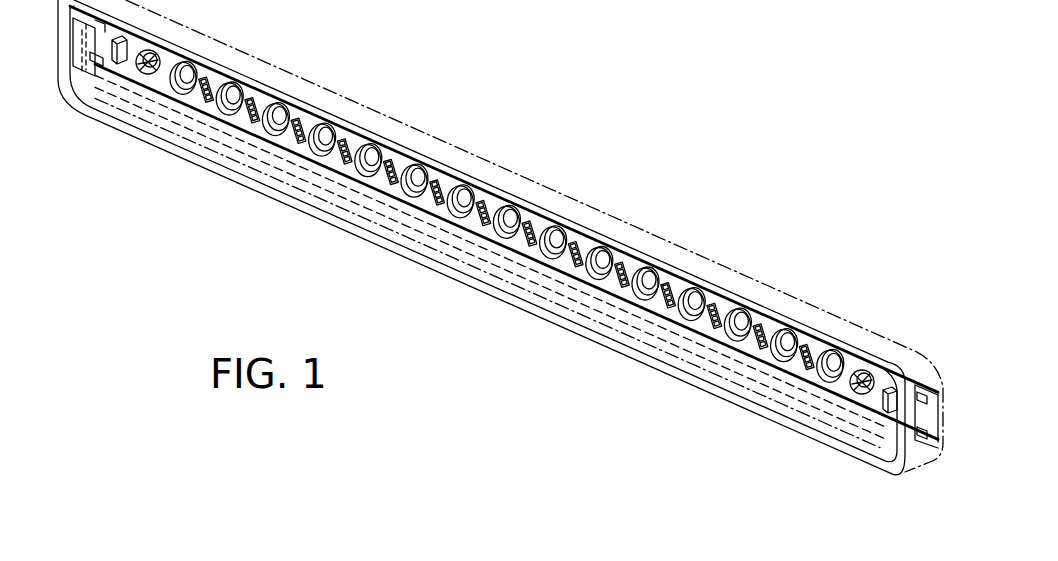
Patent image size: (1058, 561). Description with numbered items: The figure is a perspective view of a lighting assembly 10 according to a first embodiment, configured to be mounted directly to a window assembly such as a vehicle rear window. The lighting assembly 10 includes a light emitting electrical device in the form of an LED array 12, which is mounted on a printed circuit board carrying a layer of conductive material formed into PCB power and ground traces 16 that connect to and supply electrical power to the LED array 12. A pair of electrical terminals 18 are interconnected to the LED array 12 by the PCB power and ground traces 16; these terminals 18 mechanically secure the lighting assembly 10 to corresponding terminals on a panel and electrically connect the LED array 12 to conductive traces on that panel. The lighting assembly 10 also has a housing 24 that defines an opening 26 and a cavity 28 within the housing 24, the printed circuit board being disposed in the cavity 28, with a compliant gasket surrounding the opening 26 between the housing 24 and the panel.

The lighting assembly 10 is at (560, 108).
The LED array 12 is at (273, 136).
The PCB power and ground traces 16 is at (207, 97).
The pair of electrical terminals 18 is at (135, 74).
The housing 24 is at (642, 229).
The opening 26 is at (640, 352).
The cavity 28 is at (568, 288).